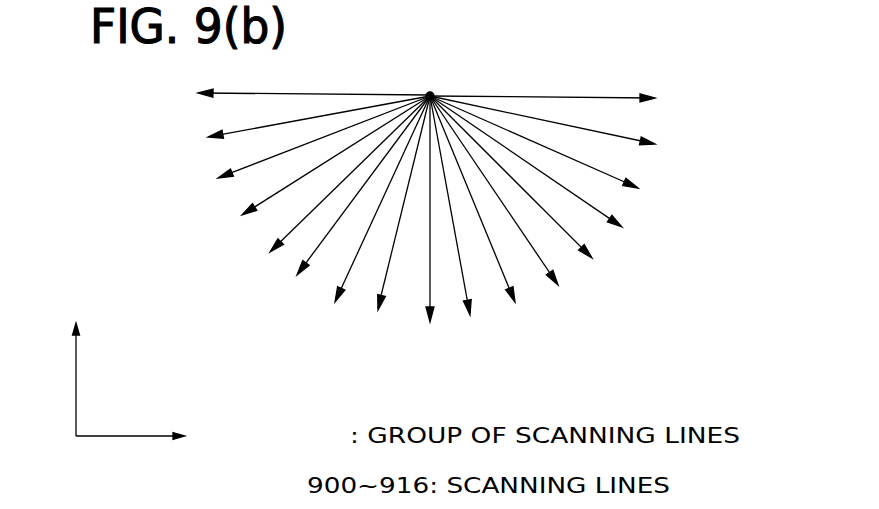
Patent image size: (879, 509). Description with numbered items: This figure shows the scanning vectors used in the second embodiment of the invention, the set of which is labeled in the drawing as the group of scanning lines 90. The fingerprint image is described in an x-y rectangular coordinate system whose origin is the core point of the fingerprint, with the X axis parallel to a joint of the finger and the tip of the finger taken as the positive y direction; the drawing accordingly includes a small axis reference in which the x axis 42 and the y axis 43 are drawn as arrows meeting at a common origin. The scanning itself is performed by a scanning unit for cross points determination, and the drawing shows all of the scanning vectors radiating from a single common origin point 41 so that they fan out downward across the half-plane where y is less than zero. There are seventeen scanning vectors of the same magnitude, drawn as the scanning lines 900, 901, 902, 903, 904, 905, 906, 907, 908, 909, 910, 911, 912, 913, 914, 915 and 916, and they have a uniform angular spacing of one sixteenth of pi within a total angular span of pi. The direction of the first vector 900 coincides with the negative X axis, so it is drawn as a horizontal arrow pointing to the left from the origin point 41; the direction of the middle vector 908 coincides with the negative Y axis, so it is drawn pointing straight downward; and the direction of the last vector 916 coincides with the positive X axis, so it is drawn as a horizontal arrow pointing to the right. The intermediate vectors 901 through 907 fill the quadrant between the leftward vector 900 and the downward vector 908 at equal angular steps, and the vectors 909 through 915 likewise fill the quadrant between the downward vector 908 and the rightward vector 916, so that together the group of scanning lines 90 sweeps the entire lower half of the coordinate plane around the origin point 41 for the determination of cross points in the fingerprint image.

The scanning origin point 41 is at (433, 92).
The x axis 42 is at (145, 437).
The y axis 43 is at (76, 392).
The group of scanning lines 90 is at (423, 243).
The scanning vector 900 is at (248, 93).
The scanning vector 901 is at (240, 131).
The scanning vector 902 is at (250, 166).
The scanning vector 903 is at (265, 200).
The scanning vector 904 is at (290, 232).
The scanning vector 905 is at (310, 258).
The scanning vector 906 is at (352, 266).
The scanning vector 907 is at (385, 282).
The scanning vector 908 is at (432, 300).
The scanning vector 909 is at (468, 300).
The scanning vector 910 is at (507, 280).
The scanning vector 911 is at (544, 265).
The scanning vector 912 is at (583, 243).
The scanning vector 913 is at (605, 214).
The scanning vector 914 is at (611, 175).
The scanning vector 915 is at (628, 136).
The scanning vector 916 is at (630, 96).